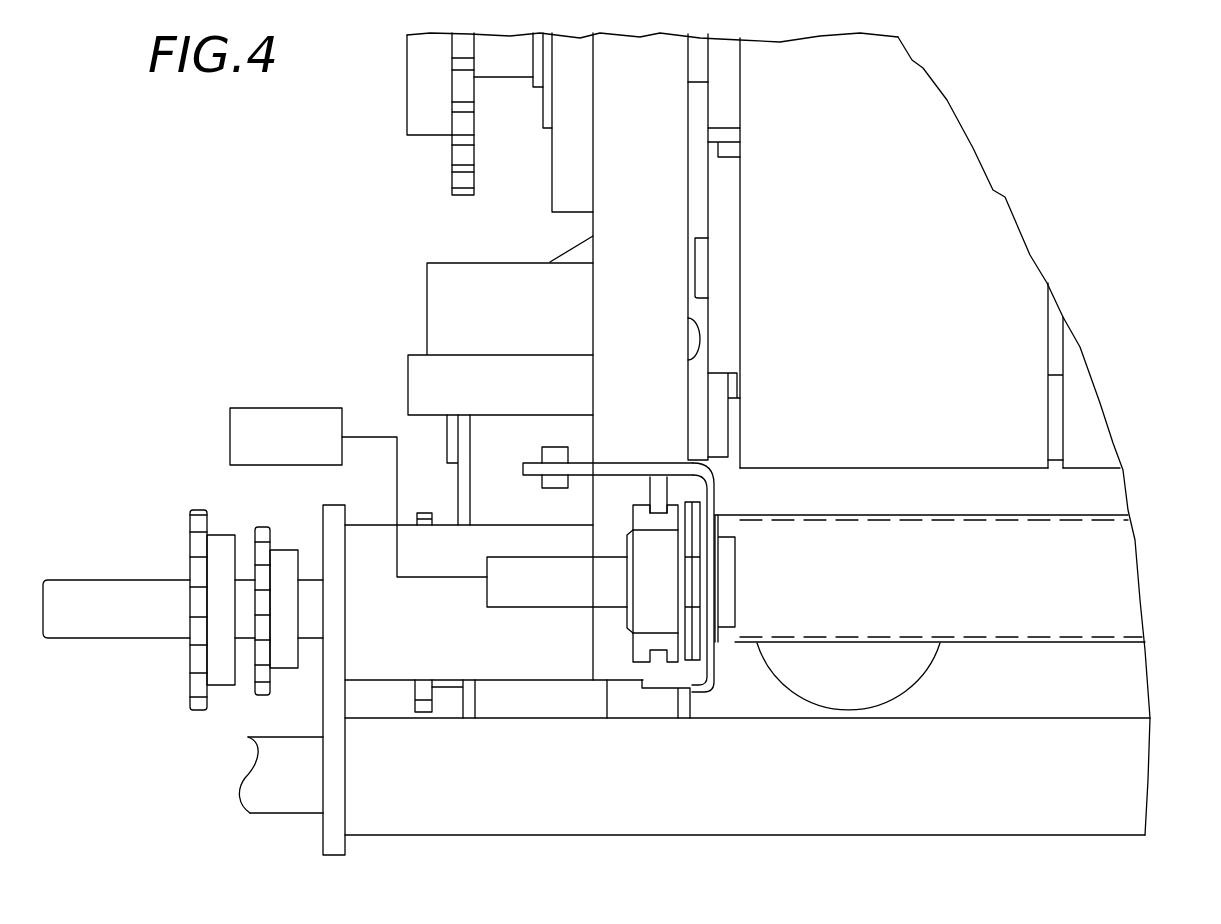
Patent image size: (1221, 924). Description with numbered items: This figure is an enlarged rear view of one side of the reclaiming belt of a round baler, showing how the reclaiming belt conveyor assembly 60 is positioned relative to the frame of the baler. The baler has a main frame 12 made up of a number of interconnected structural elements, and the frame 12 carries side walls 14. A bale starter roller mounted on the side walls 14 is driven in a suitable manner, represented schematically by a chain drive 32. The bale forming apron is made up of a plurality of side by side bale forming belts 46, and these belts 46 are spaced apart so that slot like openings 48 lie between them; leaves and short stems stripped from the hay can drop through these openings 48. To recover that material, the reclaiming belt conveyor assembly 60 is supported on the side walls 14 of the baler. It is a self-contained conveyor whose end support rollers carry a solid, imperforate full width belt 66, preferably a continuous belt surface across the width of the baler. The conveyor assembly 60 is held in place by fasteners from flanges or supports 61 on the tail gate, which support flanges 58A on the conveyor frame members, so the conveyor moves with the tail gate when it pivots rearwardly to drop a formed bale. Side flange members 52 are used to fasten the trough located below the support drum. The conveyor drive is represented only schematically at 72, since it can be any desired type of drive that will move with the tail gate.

The main frame 12 is at (502, 815).
The side walls 14 is at (667, 322).
The chain drive 32 is at (460, 88).
The bale forming belts 46 is at (867, 447).
The slot like openings 48 is at (1057, 467).
The side flange members 52 is at (655, 692).
The flanges 58A is at (585, 477).
The reclaiming belt conveyor assembly 60 is at (974, 648).
The supports 61 is at (580, 463).
The full width belt 66 is at (842, 600).
The conveyor drive 72 is at (303, 407).